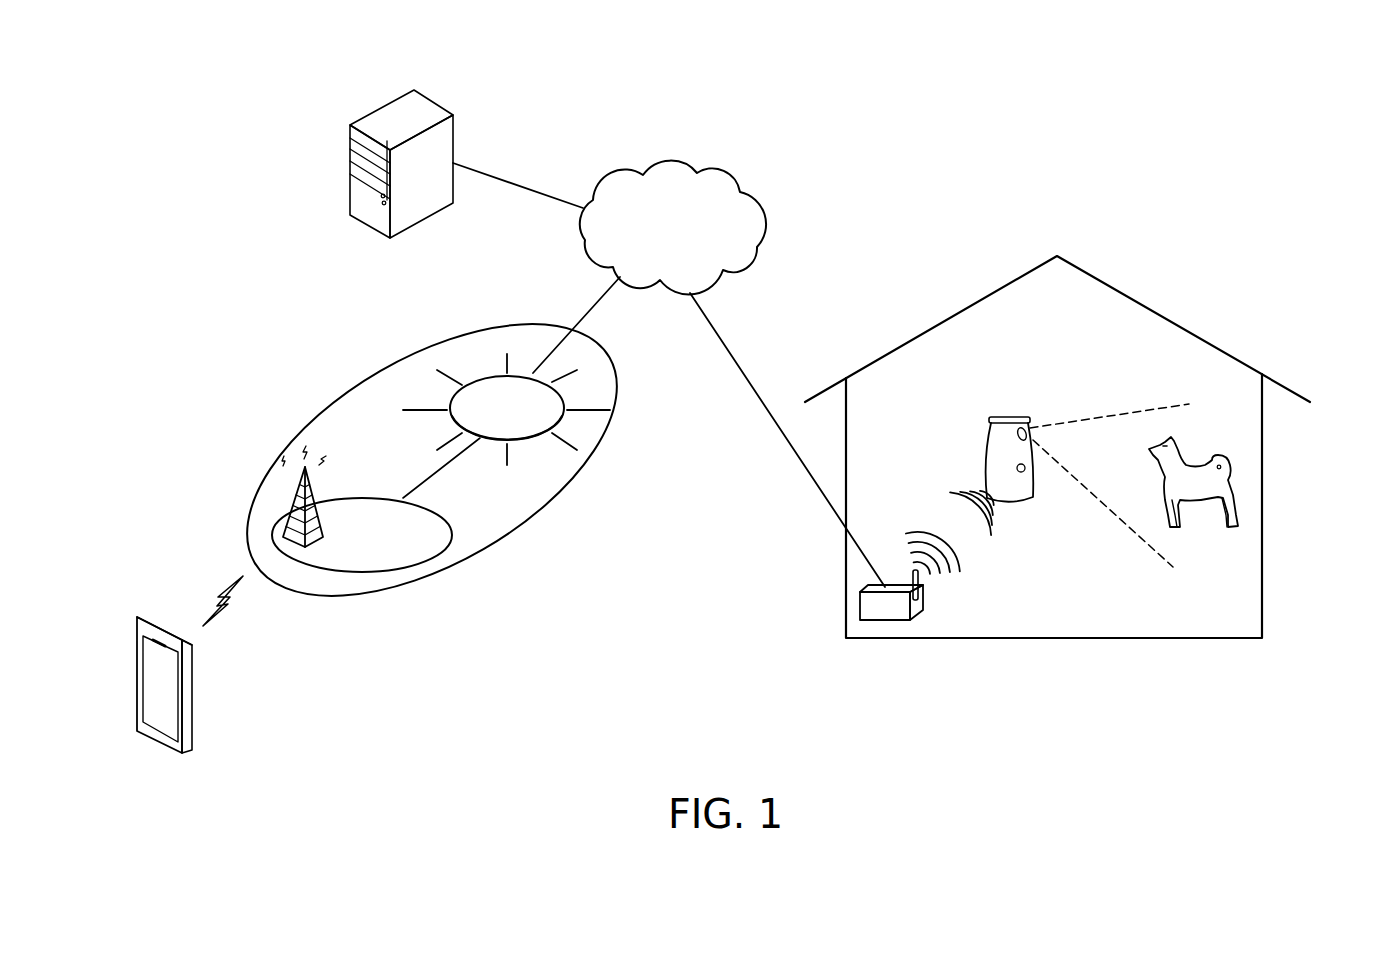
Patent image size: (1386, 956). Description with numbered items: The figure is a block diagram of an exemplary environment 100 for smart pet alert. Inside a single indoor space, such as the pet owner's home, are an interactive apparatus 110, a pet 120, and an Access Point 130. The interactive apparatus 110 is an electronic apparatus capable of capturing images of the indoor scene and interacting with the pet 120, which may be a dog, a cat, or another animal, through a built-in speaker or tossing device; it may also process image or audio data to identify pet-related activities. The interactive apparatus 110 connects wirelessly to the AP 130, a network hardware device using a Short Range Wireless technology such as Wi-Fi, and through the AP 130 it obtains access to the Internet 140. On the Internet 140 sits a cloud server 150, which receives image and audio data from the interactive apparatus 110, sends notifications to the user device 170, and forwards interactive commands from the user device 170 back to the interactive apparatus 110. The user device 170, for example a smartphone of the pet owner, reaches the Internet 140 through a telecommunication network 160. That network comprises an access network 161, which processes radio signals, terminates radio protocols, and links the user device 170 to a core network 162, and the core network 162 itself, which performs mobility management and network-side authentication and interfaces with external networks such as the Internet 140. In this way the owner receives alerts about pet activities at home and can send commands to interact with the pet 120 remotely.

The environment 100 is at (1232, 92).
The interactive apparatus 110 is at (1008, 417).
The pet 120 is at (1226, 455).
The Access Point (AP) 130 is at (860, 605).
The Internet 140 is at (693, 253).
The cloud server 150 is at (391, 113).
The telecommunication network 160 is at (536, 522).
The access network 161 is at (421, 569).
The core network 162 is at (476, 380).
The user device 170 is at (190, 700).